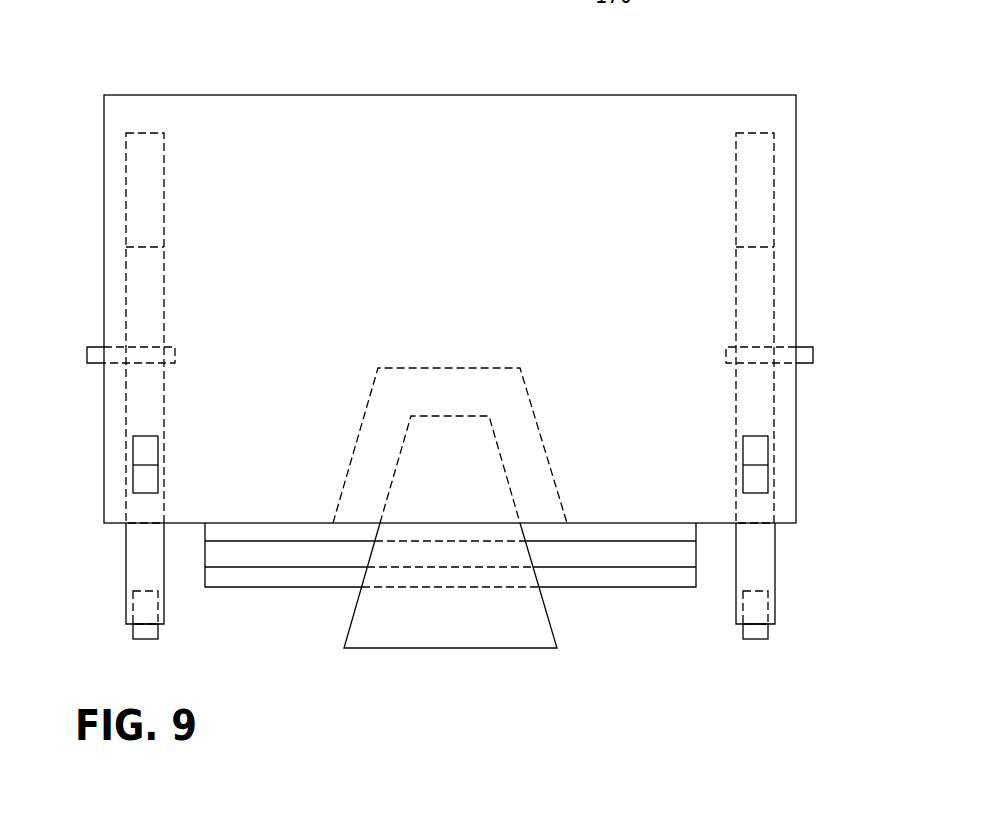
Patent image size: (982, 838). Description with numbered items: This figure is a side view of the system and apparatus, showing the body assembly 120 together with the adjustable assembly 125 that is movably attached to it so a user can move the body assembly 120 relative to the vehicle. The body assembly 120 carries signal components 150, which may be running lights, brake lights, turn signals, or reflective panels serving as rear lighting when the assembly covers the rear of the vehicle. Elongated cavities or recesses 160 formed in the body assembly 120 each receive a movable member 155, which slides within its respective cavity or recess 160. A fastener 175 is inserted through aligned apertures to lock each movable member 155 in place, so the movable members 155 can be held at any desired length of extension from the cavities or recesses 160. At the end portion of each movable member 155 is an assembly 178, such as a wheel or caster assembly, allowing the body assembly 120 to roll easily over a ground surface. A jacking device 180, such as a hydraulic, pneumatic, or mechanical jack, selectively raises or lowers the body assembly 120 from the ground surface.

The body assembly 120 is at (808, 65).
The adjustable assembly 125 is at (630, 630).
The signal component 150 is at (145, 450).
The movable member 155 is at (145, 545).
The cavity or recess 160 is at (145, 197).
The fastener 175 is at (87, 352).
The assembly 178 is at (158, 631).
The jacking device 180 is at (413, 671).